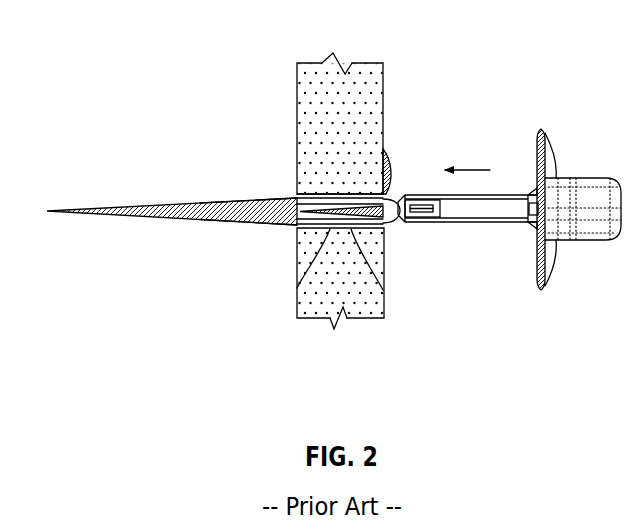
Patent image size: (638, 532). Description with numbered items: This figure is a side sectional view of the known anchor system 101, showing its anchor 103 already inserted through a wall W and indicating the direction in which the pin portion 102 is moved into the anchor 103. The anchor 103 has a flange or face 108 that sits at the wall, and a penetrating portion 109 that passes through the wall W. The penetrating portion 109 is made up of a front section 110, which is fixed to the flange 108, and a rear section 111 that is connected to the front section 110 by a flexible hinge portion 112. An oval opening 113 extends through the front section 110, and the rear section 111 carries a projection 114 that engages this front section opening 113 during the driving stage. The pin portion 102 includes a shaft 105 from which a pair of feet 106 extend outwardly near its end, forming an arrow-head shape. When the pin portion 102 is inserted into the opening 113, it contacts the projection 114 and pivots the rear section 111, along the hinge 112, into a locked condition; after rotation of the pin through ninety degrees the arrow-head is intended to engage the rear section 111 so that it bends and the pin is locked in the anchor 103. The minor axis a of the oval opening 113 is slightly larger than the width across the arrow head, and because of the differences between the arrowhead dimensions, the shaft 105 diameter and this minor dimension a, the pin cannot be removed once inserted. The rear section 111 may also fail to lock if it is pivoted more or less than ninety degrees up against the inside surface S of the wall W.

The anchor system 101 is at (414, 136).
The pin portion 102 is at (474, 249).
The anchor 103 is at (213, 192).
The shaft 105 is at (498, 218).
The feet 106 is at (422, 219).
The flange 108 is at (393, 157).
The penetrating portion 109 is at (267, 240).
The front section 110 is at (383, 290).
The rear section 111 is at (249, 197).
The flexible hinge portion 112 is at (296, 193).
The oval opening 113 is at (297, 288).
The projection 114 is at (296, 228).
The inside surface S is at (295, 80).
The wall W is at (329, 85).
The minor axis a is at (394, 226).